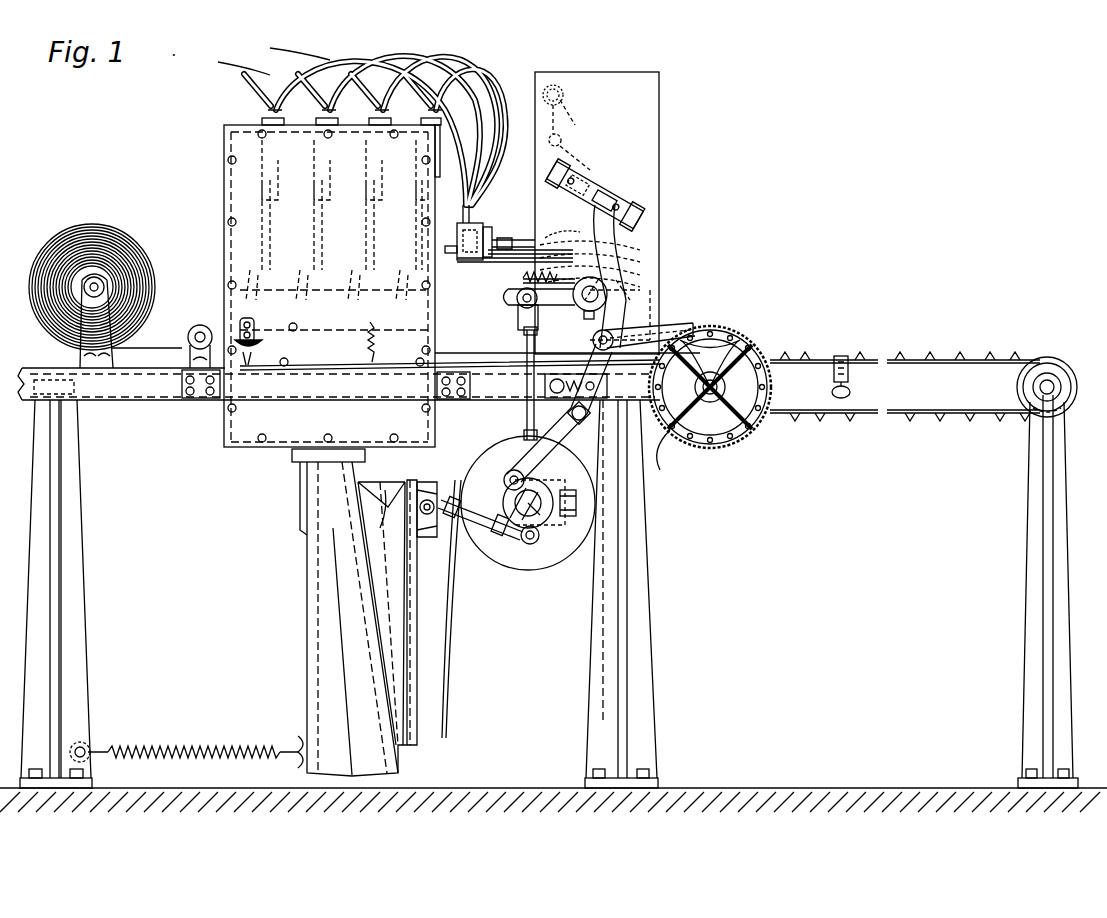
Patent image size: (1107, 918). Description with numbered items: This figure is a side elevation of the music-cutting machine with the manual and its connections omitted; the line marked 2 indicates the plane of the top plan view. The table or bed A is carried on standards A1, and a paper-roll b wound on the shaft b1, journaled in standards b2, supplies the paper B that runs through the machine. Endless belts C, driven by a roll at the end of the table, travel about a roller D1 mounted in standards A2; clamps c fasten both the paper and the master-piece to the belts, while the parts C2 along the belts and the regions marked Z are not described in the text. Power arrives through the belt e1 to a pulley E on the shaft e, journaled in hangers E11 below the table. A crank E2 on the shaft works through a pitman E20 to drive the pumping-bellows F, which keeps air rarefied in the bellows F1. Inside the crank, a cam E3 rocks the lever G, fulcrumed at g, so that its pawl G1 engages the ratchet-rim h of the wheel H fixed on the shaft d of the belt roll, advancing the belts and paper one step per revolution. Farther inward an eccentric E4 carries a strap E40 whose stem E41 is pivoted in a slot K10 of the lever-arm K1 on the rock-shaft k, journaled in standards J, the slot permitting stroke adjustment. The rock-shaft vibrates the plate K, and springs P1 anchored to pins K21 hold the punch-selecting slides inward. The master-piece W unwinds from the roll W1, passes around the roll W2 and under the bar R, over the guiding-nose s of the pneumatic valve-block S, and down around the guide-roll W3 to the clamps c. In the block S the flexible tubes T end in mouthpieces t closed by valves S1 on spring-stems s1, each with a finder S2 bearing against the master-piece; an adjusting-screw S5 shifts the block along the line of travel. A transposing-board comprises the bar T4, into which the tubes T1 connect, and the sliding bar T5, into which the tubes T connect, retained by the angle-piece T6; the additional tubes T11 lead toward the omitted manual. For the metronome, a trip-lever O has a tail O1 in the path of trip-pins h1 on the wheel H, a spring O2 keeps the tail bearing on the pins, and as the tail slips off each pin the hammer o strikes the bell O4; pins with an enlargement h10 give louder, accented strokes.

The section line 2- 2 is at (470, 223).
The table or bed A is at (156, 390).
The standard A1 is at (76, 605).
The standard A2 is at (1062, 478).
The paper B is at (160, 366).
The paper-roll b is at (90, 248).
The shaft b1 is at (99, 283).
The standard b2 is at (82, 335).
The endless belt C is at (818, 360).
The clamp c is at (845, 356).
The chain spikes C2 is at (960, 356).
The roller D1 is at (1020, 388).
The pulley E is at (522, 560).
The crank E2 is at (535, 518).
The cam E3 is at (504, 486).
The eccentric E4 is at (572, 502).
The collar or strap E40 is at (575, 517).
The frame member E11 is at (510, 433).
The stem E41 is at (495, 465).
The pitman E20 is at (465, 610).
The shaft e is at (543, 530).
The belt e1 is at (448, 642).
The pumping-bellows F is at (372, 498).
The bellows F1 is at (325, 553).
The lever G is at (598, 420).
The pawl G1 is at (648, 352).
The fulcrum g is at (587, 416).
The wheel H is at (755, 342).
The ratchet-rim h is at (740, 335).
The trip-pin h1 is at (730, 334).
The enlargement h10 is at (728, 440).
The shaft d is at (710, 402).
The standard J is at (540, 345).
The vibrating plate K is at (523, 278).
The lever-arm K1 is at (540, 308).
The slot K10 is at (508, 298).
The pin K21 is at (600, 298).
The rock-shaft k is at (600, 296).
The trip-lever O is at (406, 362).
The tail O1 is at (688, 445).
The spring O2 is at (368, 335).
The bell O4 is at (240, 342).
The hammer o is at (262, 358).
The spring P1 is at (600, 268).
The bar R is at (618, 180).
The pneumatic valve-block S is at (565, 188).
The valve S1 is at (645, 185).
The finder S2 is at (640, 175).
The adjusting-screw S5 is at (605, 230).
The guiding-nose s is at (648, 200).
The spring-stem s1 is at (592, 175).
The mouthpiece t is at (580, 200).
The flexible tube T is at (528, 240).
The tube T1 is at (490, 52).
The tube T11 is at (260, 38).
The bar T4 is at (455, 234).
The bar T5 is at (468, 256).
The angle-piece T6 is at (493, 228).
The master-piece W is at (566, 128).
The roll W1 is at (565, 96).
The roll W2 is at (563, 142).
The guide-roll W3 is at (660, 340).
The compartments Z is at (332, 282).